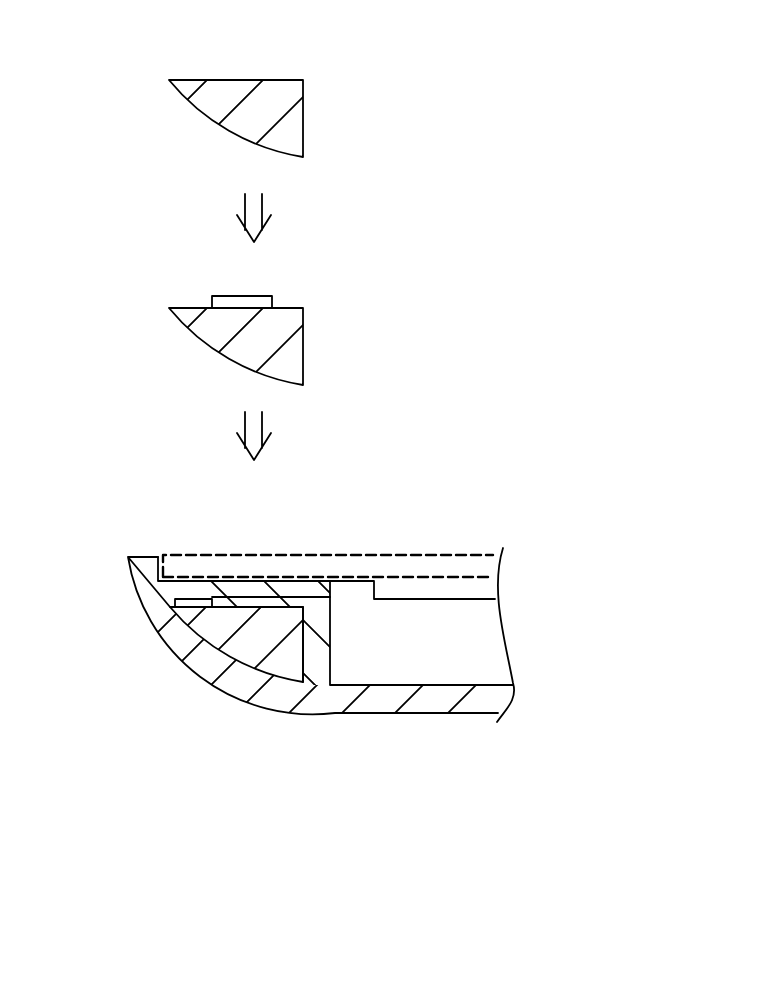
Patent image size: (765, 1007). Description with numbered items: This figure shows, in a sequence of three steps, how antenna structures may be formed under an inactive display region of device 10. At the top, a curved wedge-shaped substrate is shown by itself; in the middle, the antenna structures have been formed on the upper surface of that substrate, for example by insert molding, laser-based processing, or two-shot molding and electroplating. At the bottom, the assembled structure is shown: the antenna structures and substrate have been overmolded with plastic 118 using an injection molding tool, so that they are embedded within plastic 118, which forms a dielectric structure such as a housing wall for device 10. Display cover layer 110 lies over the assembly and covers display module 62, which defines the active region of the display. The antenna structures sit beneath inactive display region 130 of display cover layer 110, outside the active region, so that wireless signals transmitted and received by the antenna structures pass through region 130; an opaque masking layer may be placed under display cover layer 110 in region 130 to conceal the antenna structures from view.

The device 10 is at (92, 542).
The display module 62 is at (468, 582).
The display cover layer 110 is at (388, 555).
The plastic 118 is at (343, 697).
The inactive display region 130 is at (372, 548).